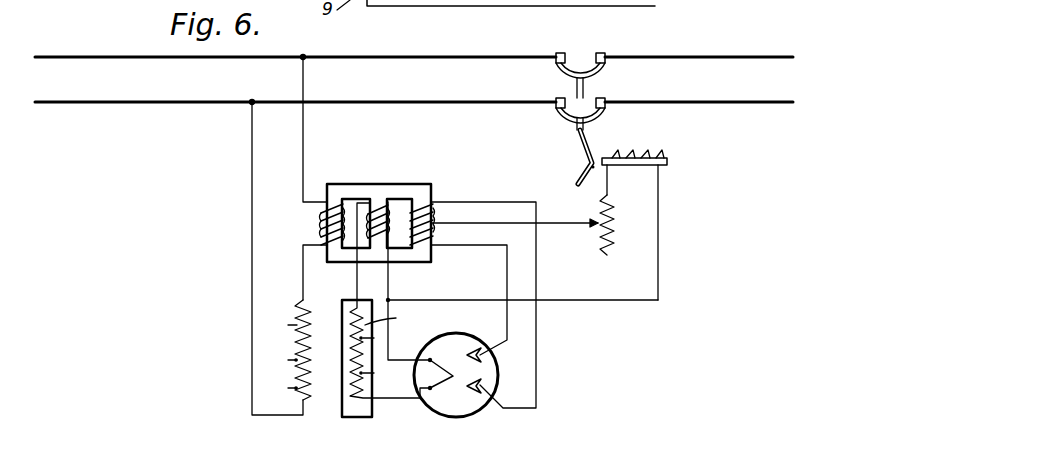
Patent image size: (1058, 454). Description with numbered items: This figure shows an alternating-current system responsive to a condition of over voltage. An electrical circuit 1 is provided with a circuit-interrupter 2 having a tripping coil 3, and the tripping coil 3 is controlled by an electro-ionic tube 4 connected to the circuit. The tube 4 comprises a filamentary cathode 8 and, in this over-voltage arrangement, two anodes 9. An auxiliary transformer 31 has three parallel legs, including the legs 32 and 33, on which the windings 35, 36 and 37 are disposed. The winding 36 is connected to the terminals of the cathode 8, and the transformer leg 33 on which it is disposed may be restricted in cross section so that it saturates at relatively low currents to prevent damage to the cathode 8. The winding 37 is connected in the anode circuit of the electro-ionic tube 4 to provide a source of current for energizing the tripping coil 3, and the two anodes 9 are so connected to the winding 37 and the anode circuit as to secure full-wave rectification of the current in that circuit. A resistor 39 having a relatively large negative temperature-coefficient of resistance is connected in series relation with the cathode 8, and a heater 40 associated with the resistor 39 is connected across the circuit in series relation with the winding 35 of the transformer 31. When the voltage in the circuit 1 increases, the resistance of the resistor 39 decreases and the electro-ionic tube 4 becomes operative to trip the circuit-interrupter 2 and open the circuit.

The electrical circuit 1 is at (465, 93).
The circuit-interrupter 2 is at (595, 116).
The tripping coil 3 is at (645, 167).
The electro-ionic tube 4 is at (477, 403).
The filamentary cathode 8 is at (442, 383).
The anodes 9 is at (483, 368).
The auxiliary transformer 31 is at (382, 196).
The transformer leg 32 is at (337, 240).
The transformer leg 33 is at (378, 243).
The winding 35 is at (325, 226).
The winding 36 is at (388, 228).
The winding 37 is at (433, 232).
The resistor 39 is at (362, 374).
The heater 40 is at (300, 340).